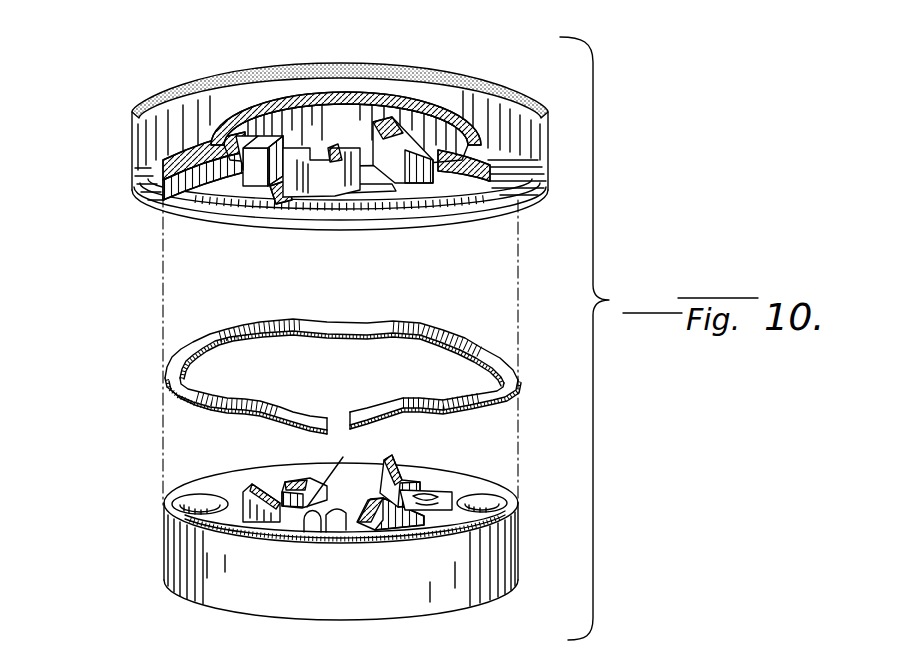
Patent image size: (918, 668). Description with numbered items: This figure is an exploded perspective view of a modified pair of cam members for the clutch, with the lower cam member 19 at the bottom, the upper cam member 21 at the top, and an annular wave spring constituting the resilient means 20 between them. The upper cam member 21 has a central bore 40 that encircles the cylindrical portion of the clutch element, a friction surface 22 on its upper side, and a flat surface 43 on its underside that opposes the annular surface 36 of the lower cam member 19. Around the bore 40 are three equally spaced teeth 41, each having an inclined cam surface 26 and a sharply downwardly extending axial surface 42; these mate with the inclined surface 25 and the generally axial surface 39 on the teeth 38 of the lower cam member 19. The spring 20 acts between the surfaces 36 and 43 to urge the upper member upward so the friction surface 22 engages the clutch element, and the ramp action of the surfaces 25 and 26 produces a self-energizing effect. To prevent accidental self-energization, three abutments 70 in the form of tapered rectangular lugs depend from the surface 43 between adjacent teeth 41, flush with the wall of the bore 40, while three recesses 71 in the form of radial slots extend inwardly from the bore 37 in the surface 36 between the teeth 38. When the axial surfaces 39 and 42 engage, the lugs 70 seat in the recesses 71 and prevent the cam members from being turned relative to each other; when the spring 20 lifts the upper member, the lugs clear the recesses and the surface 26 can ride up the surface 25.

The lower cam member 19 is at (172, 587).
The resilient means 20 is at (185, 358).
The upper cam member 21 is at (129, 118).
The friction surface 22 is at (312, 63).
The inclined cam surface 25 is at (372, 486).
The inclined cam surface 26 is at (243, 137).
The annular surface 36 is at (478, 490).
The bore 37 is at (318, 532).
The tooth 38 is at (388, 455).
The axial surface 39 is at (243, 493).
The central bore 40 is at (400, 165).
The tooth 41 is at (290, 164).
The axial surface 42 is at (396, 145).
The downwardly facing surface 43 is at (168, 205).
The abutment 70 is at (300, 195).
The recess 71 is at (310, 487).